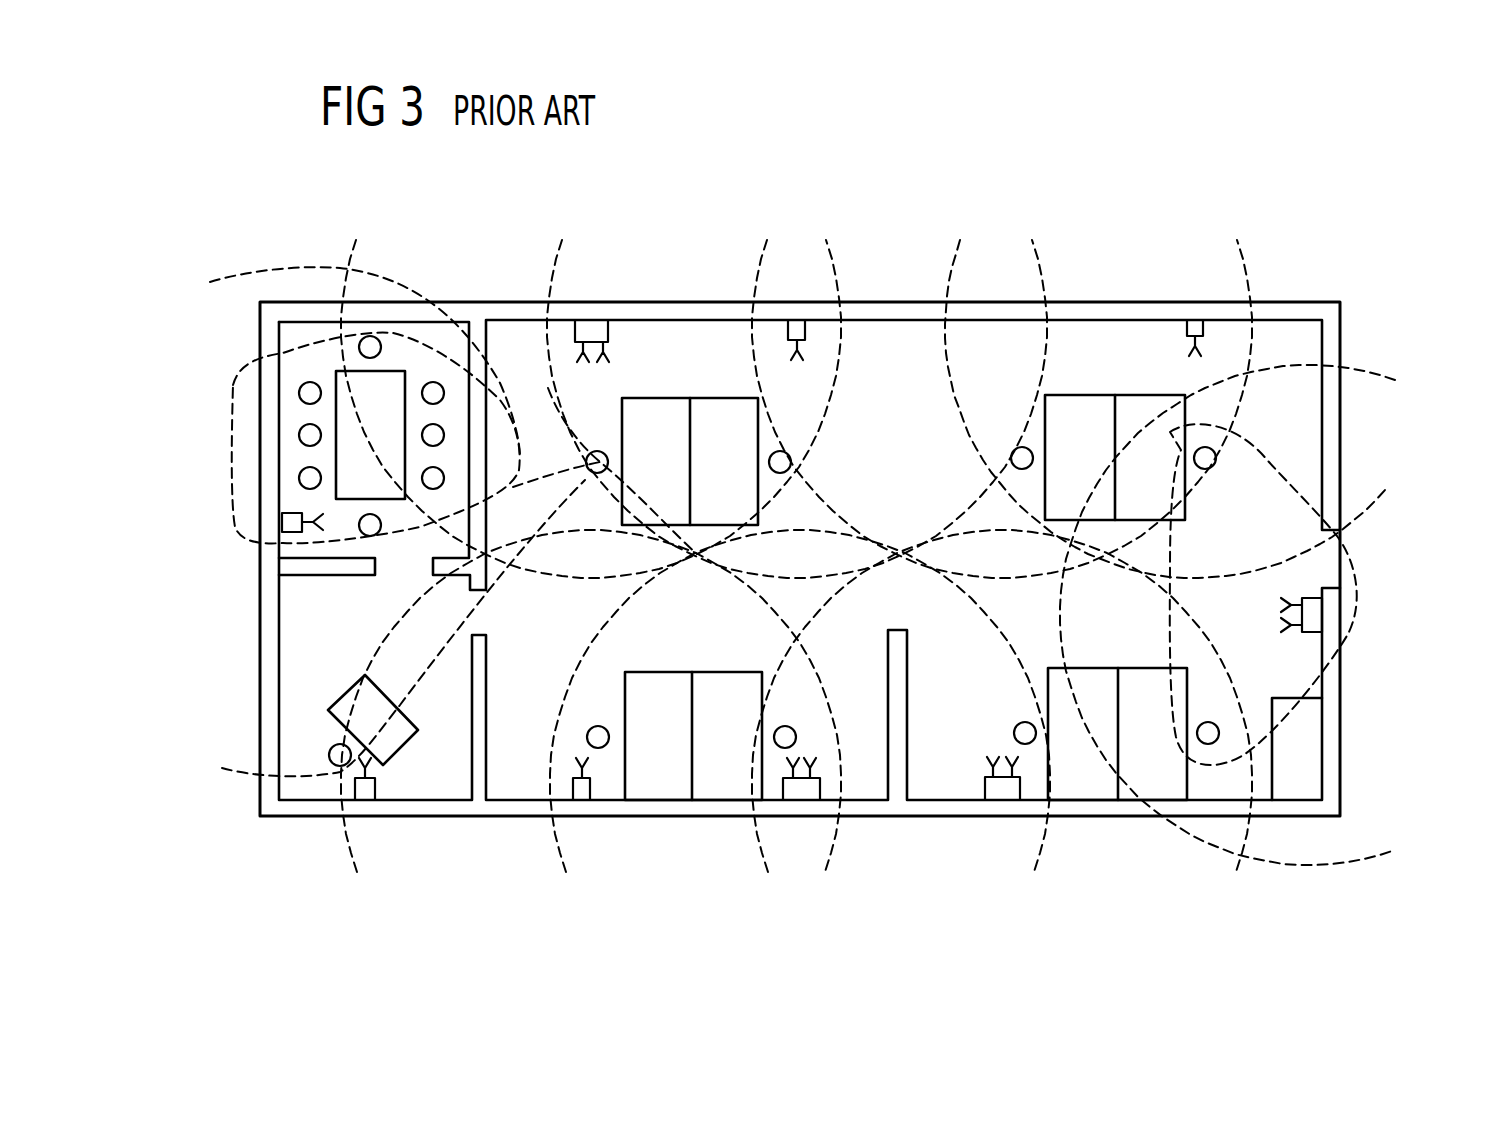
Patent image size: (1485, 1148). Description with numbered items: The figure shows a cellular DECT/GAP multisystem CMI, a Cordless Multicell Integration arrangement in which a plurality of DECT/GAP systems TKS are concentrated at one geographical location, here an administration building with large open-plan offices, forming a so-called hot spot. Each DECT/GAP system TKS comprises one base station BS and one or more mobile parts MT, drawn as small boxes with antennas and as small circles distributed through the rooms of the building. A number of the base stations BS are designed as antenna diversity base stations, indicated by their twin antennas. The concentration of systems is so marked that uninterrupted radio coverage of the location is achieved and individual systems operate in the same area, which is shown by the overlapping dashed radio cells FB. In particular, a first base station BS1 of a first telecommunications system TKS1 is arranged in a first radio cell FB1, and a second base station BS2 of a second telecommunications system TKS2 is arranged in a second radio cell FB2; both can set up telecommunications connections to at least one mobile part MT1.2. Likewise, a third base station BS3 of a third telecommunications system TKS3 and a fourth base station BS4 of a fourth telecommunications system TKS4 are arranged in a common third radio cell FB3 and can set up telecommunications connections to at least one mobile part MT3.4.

The cellular DECT/GAP multisystem CMI is at (890, 290).
The radio cell FB is at (833, 237).
The first radio cell FB1 is at (1348, 507).
The second radio cell FB2 is at (1393, 866).
The common third radio cell FB3 is at (1238, 875).
The DECT/GAP system TKS is at (232, 437).
The first telecommunications system TKS1 is at (1189, 382).
The second telecommunications system TKS2 is at (1245, 610).
The third telecommunications system TKS3 is at (1038, 744).
The fourth telecommunications system TKS4 is at (1064, 838).
The base station BS is at (283, 521).
The first base station BS1 is at (1185, 325).
The second base station BS2 is at (1315, 611).
The third base station BS3 is at (1003, 803).
The fourth base station BS4 is at (803, 803).
The mobile part MT is at (422, 478).
The mobile part MT1.2 is at (1205, 469).
The mobile part MT3.4 is at (790, 730).